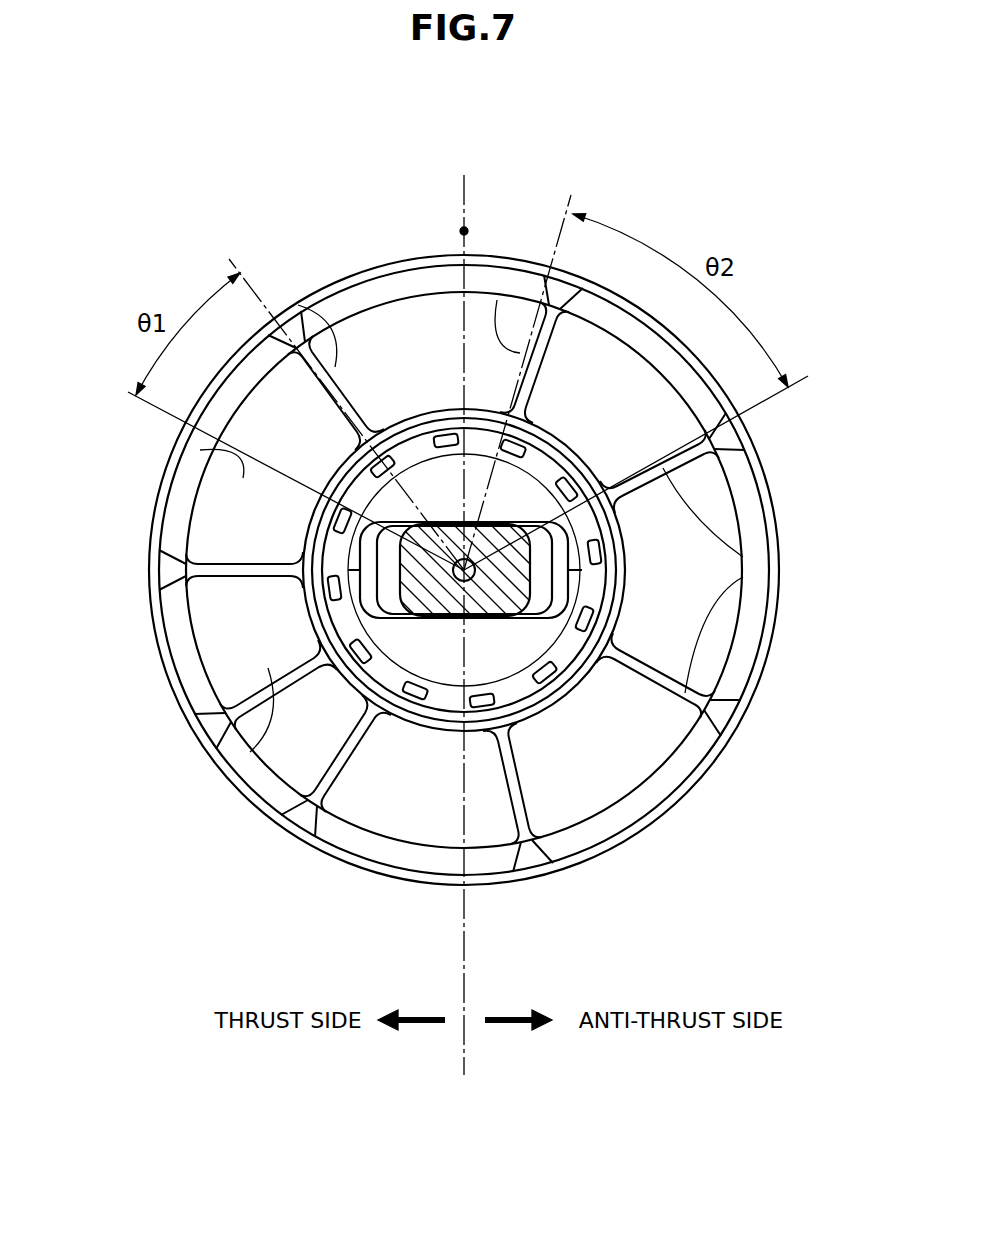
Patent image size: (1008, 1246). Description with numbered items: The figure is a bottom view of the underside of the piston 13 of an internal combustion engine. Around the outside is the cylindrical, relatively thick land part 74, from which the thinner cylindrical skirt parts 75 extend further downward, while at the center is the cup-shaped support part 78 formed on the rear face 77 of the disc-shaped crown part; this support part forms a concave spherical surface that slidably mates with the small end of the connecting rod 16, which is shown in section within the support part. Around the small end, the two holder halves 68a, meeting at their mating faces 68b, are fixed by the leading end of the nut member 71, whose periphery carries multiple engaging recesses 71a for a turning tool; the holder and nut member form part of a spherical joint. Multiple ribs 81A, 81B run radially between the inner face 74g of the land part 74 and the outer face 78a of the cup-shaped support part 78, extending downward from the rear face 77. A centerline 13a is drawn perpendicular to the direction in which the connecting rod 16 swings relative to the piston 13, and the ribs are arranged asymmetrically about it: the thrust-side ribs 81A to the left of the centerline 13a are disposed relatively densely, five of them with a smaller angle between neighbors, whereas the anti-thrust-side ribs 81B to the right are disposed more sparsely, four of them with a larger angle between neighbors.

The piston 13 is at (365, 268).
The centerline 13a is at (466, 231).
The connecting rod 16 is at (495, 627).
The holder half 68a is at (515, 485).
The mating face 68b is at (330, 618).
The nut member 71 is at (585, 683).
The engaging recess 71a is at (578, 677).
The land part 74 is at (418, 293).
The inner face of land part 74g is at (325, 330).
The skirt part 75 is at (163, 650).
The rear face of crown part 77 is at (720, 493).
The cup-shaped support part 78 is at (293, 542).
The outer face of cup-shaped support part 78a is at (297, 595).
The thrust-side rib 81A is at (300, 335).
The anti-thrust-side rib 81B is at (498, 300).